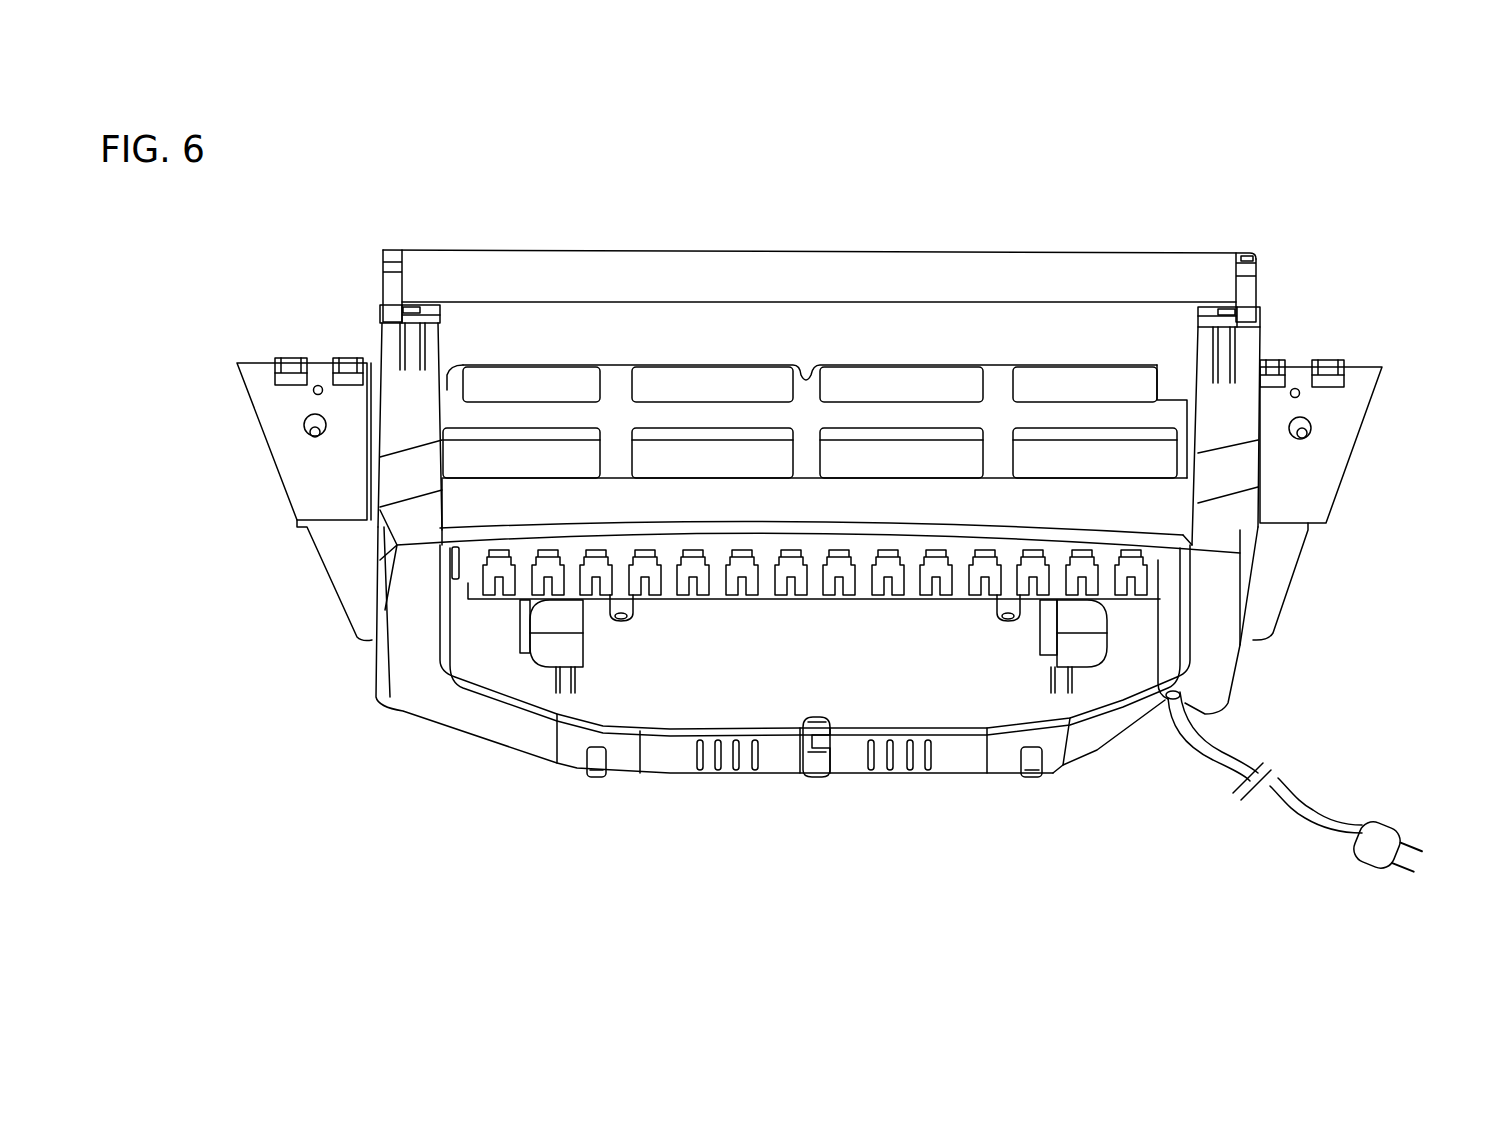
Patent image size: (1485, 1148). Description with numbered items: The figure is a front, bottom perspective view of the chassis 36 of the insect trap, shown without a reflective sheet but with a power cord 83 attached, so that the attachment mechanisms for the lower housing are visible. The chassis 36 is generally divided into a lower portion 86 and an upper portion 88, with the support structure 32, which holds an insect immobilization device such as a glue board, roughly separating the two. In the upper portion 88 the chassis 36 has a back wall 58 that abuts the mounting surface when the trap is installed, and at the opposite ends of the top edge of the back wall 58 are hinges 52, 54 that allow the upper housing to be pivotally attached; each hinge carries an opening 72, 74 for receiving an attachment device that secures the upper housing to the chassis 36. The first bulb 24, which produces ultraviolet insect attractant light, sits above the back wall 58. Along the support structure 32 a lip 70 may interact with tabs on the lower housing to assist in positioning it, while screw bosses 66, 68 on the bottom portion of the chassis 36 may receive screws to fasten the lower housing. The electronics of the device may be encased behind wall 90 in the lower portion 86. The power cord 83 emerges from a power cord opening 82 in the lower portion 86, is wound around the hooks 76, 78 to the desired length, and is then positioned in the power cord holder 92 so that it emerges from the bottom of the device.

The first bulb 24 is at (815, 268).
The support structure 32 is at (1148, 551).
The chassis 36 is at (1256, 189).
The hinge 52 is at (1357, 388).
The hinge 54 is at (258, 373).
The back wall 58 is at (1058, 387).
The screw boss 66 is at (1030, 762).
The screw boss 68 is at (600, 762).
The lip 70 is at (1210, 563).
The opening 72 is at (1305, 434).
The opening 74 is at (312, 437).
The hook 76 is at (1083, 653).
The hook 78 is at (547, 657).
The power cord opening 82 is at (1183, 692).
The power cord 83 is at (1290, 813).
The lower portion 86 is at (1227, 681).
The upper portion 88 is at (1243, 388).
The wall 90 is at (755, 697).
The power cord holder 92 is at (817, 768).